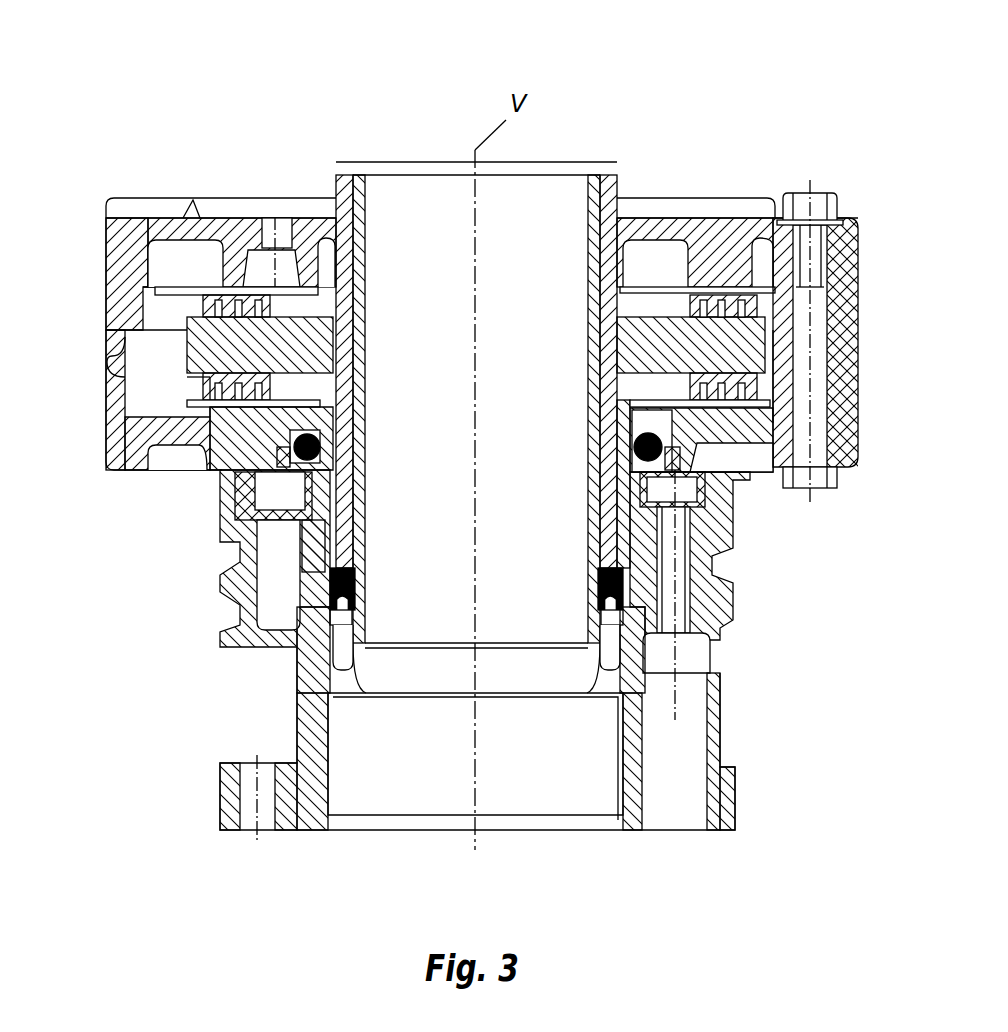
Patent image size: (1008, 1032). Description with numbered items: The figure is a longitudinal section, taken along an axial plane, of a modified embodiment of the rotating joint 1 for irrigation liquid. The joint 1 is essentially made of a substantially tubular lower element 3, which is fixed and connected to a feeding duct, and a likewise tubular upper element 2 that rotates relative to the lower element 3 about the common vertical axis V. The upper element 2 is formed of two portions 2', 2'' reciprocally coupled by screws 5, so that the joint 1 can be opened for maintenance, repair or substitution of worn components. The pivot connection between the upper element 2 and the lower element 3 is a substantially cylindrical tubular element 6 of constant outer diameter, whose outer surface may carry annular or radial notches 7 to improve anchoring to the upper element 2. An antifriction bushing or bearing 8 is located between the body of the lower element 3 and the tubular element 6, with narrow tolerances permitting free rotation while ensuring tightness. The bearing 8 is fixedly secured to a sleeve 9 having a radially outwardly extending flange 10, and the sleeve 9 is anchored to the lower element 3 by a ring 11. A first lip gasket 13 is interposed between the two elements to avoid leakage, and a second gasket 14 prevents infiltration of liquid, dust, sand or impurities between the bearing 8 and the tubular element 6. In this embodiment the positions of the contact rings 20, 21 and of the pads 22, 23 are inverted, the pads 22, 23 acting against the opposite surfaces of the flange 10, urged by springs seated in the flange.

The rotating joint 1 is at (680, 598).
The upper element 2 is at (482, 156).
The first portion of the upper element 2' is at (164, 278).
The second portion of the upper element 2'' is at (420, 481).
The lower element 3 is at (742, 730).
The screws 5 is at (817, 303).
The tubular element 6 is at (420, 162).
The notches 7 is at (336, 200).
The bushing or bearing 8 is at (325, 540).
The sleeve 9 is at (318, 532).
The flange 10 is at (197, 352).
The ring 11 is at (710, 537).
The first lip gasket 13 is at (352, 582).
The second gasket 14 is at (322, 450).
The contact ring 20 is at (185, 243).
The contact ring 21 is at (187, 408).
The pad 22 is at (713, 297).
The pad 23 is at (723, 400).